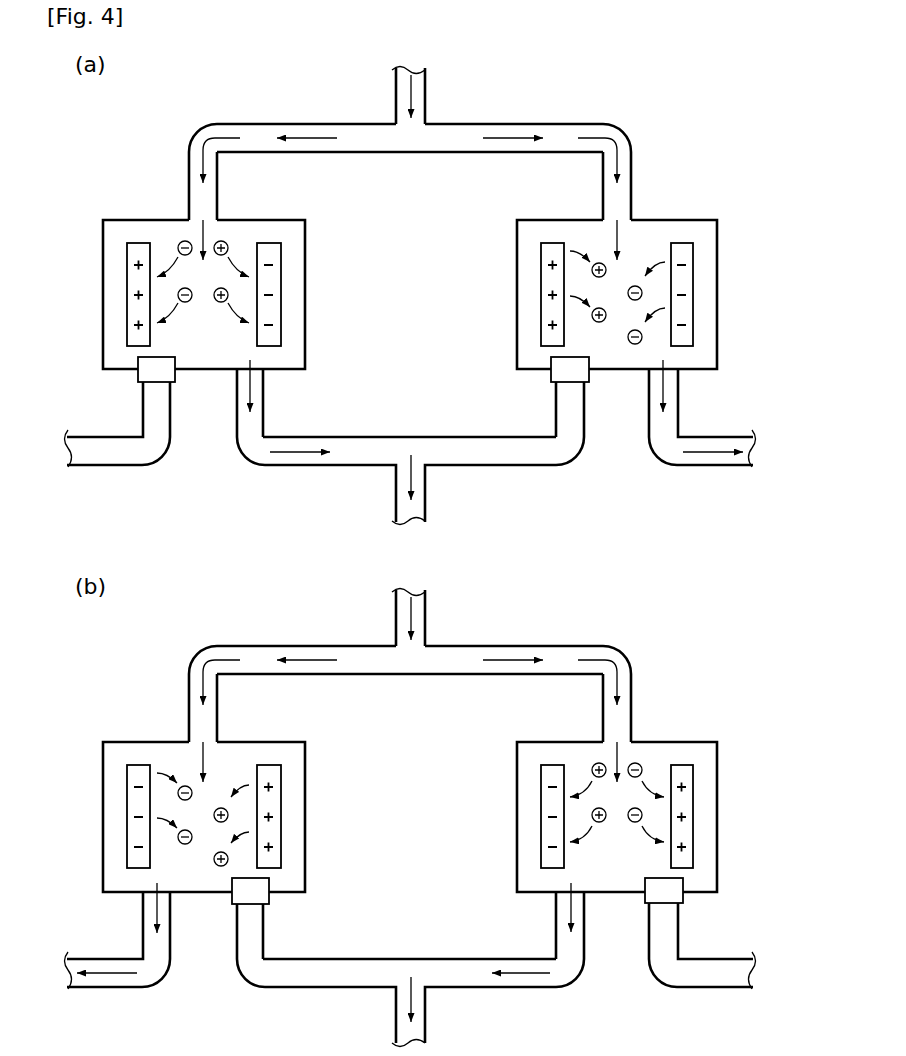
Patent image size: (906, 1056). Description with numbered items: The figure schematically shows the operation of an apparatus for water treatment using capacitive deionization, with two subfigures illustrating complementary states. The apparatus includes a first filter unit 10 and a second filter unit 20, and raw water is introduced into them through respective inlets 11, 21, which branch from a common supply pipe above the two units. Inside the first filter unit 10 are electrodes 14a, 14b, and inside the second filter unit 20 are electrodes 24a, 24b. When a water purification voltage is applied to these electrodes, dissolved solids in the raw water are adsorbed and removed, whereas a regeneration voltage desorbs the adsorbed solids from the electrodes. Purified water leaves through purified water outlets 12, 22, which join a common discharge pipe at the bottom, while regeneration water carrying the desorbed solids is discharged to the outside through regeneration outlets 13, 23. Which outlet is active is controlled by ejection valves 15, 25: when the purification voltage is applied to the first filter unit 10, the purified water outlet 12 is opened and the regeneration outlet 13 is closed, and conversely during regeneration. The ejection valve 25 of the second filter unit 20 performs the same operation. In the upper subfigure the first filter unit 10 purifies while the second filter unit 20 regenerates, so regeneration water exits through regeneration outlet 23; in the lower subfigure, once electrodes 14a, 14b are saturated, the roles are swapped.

The first filter unit 10 is at (305, 248).
The inlet 11 is at (212, 213).
The purified water outlet 12 is at (257, 386).
The regeneration outlet 13 is at (150, 387).
The electrode 14a is at (127, 296).
The electrode 14b is at (281, 296).
The ejection valve 15 is at (138, 364).
The second filter unit 20 is at (717, 248).
The inlet 21 is at (626, 213).
The purified water outlet 22 is at (564, 387).
The regeneration outlet 23 is at (670, 386).
The electrode 24a is at (541, 296).
The electrode 24b is at (693, 296).
The ejection valve 25 is at (551, 364).